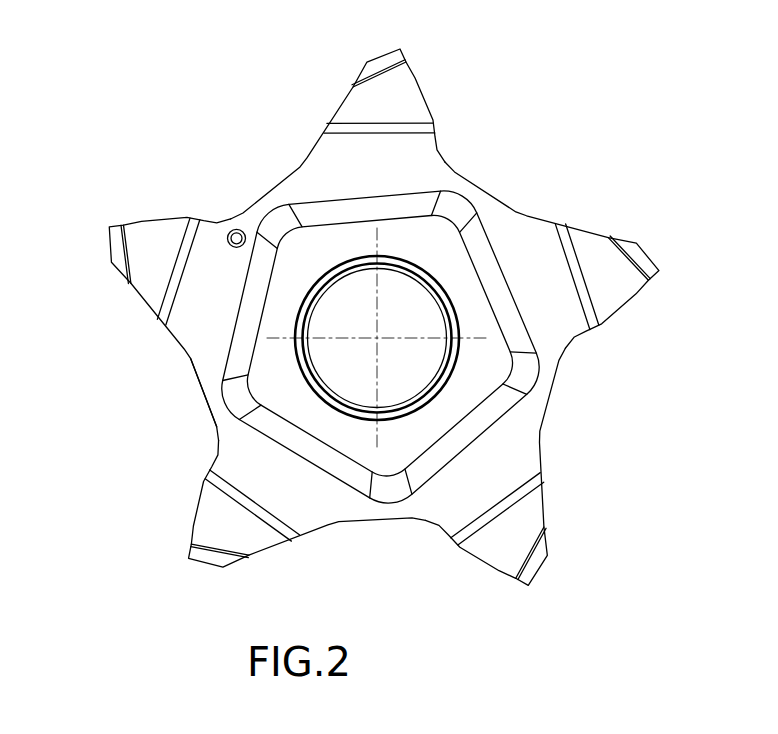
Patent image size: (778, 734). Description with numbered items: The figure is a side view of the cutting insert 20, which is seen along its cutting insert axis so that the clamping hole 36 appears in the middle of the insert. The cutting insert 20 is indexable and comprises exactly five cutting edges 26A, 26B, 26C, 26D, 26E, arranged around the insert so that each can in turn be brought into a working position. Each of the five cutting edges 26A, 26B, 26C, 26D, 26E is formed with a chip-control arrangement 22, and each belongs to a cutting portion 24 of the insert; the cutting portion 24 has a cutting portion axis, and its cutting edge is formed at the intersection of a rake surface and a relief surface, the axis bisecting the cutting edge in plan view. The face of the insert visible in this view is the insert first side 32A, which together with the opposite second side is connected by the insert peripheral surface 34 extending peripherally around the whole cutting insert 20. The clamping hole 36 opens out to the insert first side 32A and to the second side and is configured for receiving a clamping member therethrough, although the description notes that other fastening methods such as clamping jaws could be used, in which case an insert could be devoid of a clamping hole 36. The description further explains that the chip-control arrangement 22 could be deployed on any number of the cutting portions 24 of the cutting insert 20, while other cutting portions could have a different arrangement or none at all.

The cutting insert 20 is at (395, 340).
The chip-control arrangement 22 is at (420, 64).
The cutting portion 24 is at (448, 97).
The cutting edge 26A is at (104, 230).
The cutting edge 26B is at (190, 552).
The cutting edge 26C is at (530, 584).
The cutting edge 26D is at (665, 282).
The cutting edge 26E is at (402, 48).
The insert first side 32A is at (528, 237).
The insert peripheral surface 34 is at (200, 386).
The clamping hole 36 is at (455, 378).